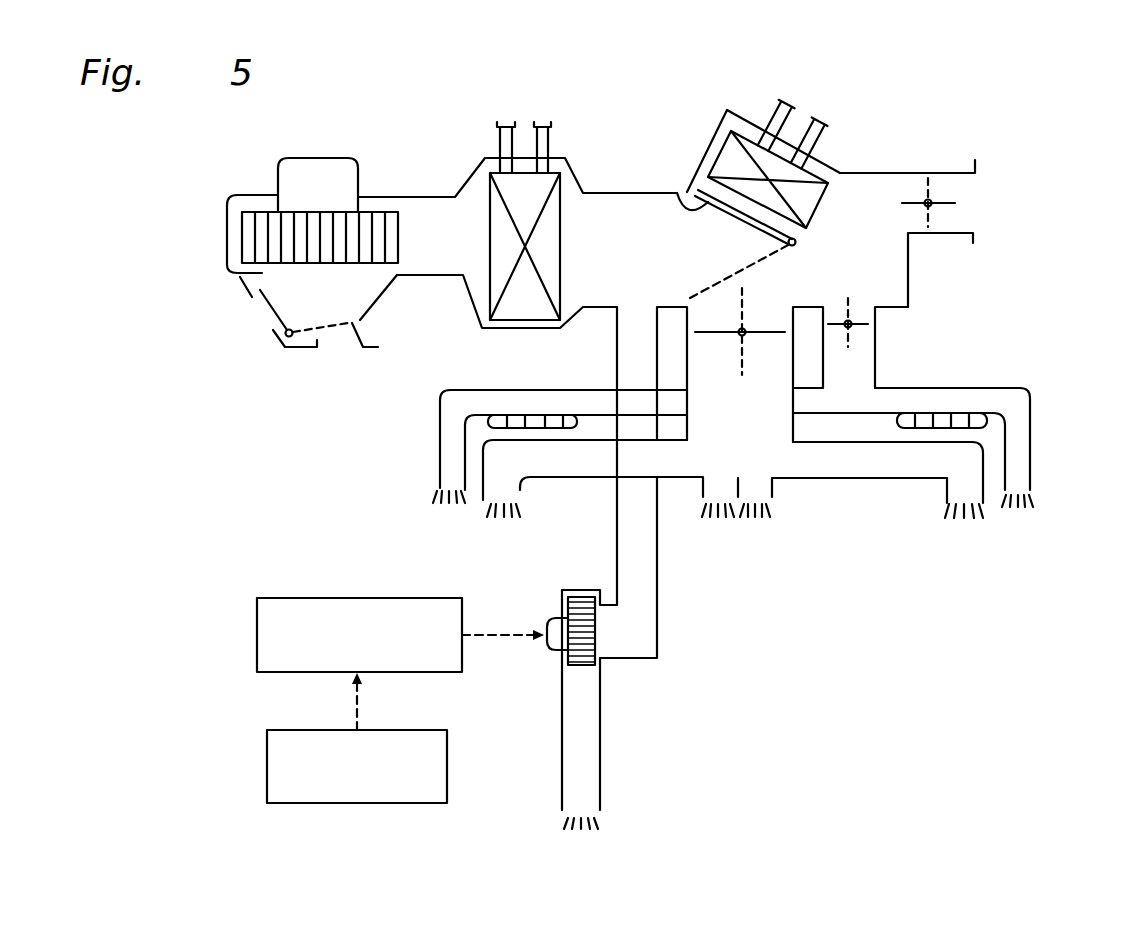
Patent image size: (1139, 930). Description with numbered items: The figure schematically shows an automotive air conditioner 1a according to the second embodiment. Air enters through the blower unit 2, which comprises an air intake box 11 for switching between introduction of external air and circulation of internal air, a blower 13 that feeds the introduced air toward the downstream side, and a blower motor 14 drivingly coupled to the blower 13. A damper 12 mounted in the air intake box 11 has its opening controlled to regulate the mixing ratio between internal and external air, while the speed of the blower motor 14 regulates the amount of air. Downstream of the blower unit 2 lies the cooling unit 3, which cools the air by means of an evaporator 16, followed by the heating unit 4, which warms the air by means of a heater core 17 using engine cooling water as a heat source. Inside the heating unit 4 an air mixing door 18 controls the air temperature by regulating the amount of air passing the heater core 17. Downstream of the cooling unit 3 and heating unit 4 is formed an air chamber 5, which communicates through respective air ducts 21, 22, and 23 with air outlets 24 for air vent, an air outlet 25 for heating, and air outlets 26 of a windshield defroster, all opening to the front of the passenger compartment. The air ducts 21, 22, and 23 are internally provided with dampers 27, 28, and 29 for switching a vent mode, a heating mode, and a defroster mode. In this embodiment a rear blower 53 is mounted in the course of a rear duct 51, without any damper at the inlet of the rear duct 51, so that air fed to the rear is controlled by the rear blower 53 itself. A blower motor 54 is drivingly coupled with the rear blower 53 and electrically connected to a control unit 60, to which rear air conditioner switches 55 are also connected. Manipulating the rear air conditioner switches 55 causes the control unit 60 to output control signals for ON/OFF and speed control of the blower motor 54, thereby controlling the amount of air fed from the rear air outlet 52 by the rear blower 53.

The air conditioner 1a is at (313, 398).
The blower unit 2 is at (368, 163).
The cooling unit 3 is at (580, 159).
The heating unit 4 is at (827, 155).
The air chamber 5 is at (707, 237).
The air intake box 11 is at (380, 302).
The damper 12 is at (267, 308).
The blower 13 is at (240, 237).
The blower motor 14 is at (278, 163).
The evaporator 16 is at (490, 233).
The heater core 17 is at (818, 205).
The air mixing door 18 is at (678, 190).
The air duct 21 is at (730, 408).
The air duct 22 is at (946, 172).
The air duct 23 is at (877, 345).
The air outlets for air vent 24 is at (508, 490).
The air outlet for heating 25 is at (968, 219).
The air outlets of windshield defroster 26 is at (447, 480).
The damper 27 is at (762, 335).
The damper 28 is at (945, 200).
The damper 29 is at (855, 320).
The rear duct 51 is at (658, 577).
The rear air outlet 52 is at (582, 803).
The rear blower 53 is at (582, 665).
The blower motor 54 is at (550, 622).
The rear air conditioner switches 55 is at (267, 762).
The control unit 60 is at (257, 640).